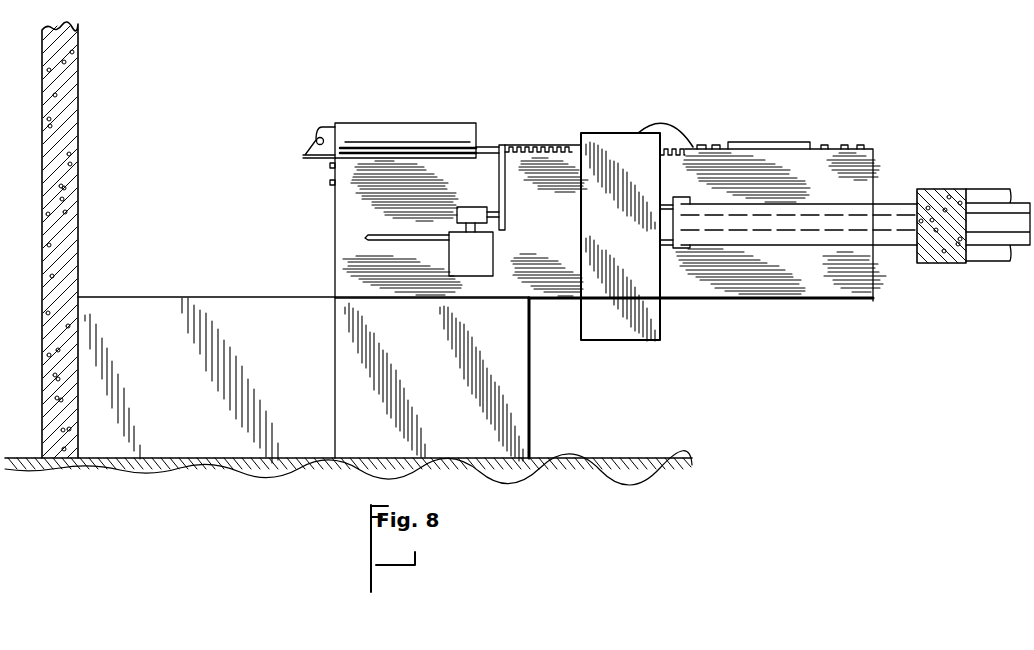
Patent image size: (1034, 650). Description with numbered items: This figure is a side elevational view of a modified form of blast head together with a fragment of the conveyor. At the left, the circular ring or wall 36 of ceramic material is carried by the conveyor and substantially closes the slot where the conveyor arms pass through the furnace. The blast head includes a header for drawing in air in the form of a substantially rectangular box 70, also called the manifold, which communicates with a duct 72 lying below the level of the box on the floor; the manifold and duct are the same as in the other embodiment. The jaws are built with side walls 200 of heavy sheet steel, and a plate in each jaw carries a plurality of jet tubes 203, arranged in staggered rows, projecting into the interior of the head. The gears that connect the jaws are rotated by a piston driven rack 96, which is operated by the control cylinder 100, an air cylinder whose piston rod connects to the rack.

The circular ring or wall 36 is at (927, 187).
The box 70 is at (524, 246).
The duct 72 is at (281, 355).
The piston driven rack 96 is at (533, 143).
The air cylinder 100 is at (416, 125).
The side walls 200 is at (862, 163).
The jet tubes 203 is at (858, 148).